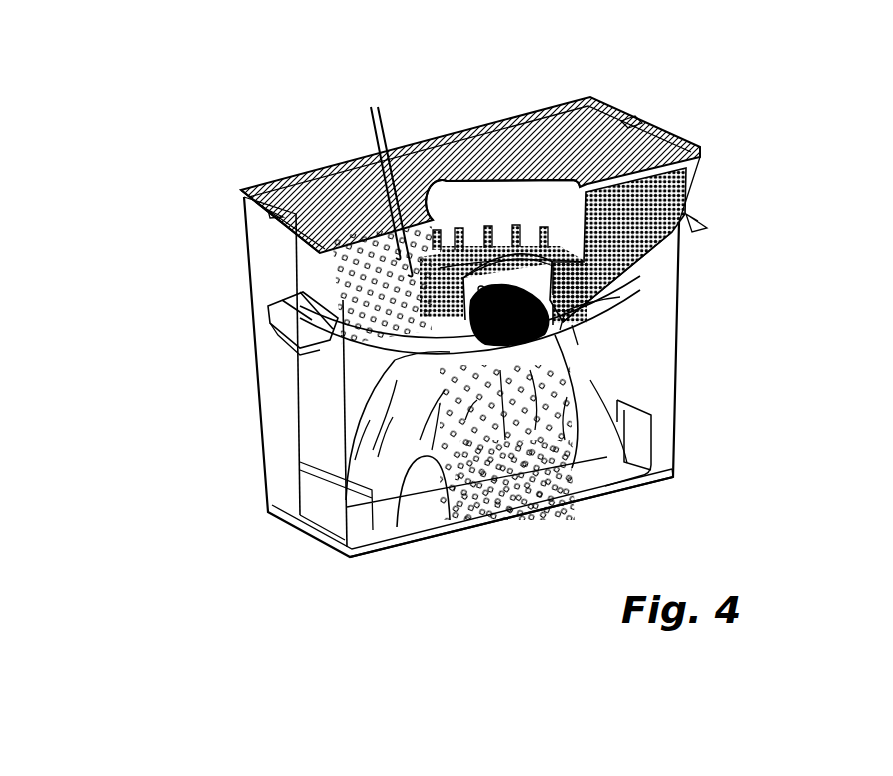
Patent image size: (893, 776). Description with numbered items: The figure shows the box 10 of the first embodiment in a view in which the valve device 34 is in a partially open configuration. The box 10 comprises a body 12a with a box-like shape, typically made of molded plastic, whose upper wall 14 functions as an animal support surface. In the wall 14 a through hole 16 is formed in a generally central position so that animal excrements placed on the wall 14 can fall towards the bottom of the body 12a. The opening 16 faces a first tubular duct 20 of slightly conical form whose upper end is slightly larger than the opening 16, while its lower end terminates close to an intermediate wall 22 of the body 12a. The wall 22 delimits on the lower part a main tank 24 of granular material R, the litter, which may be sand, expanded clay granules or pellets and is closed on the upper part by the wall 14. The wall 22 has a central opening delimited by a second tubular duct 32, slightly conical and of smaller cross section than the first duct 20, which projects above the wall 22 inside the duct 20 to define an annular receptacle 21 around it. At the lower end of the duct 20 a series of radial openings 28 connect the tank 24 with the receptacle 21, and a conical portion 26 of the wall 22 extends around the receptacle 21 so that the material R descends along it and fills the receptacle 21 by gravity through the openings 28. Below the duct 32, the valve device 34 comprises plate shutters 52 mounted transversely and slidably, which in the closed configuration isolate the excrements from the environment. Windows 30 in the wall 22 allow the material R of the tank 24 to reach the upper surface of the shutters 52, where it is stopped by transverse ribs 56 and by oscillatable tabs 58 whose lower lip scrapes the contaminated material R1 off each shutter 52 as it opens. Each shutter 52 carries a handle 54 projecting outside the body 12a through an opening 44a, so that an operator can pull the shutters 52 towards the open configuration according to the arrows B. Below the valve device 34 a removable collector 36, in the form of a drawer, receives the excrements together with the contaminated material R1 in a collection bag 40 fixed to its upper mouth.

The box 10 is at (197, 169).
The body 12a is at (375, 563).
The upper wall 14 is at (607, 142).
The through hole 16 is at (450, 205).
The first tubular duct 20 is at (486, 200).
The annular receptacle 21 is at (560, 248).
The intermediate wall 22 is at (620, 297).
The main tank 24 is at (345, 237).
The conical portion 26 is at (680, 243).
The radial openings 28 is at (383, 169).
The windows 30 is at (358, 258).
The second tubular duct 32 is at (520, 270).
The valve device 34 is at (585, 337).
The removable collector 36 is at (668, 477).
The excrement collection bag 40 is at (437, 473).
The opening 44a is at (310, 347).
The plate shutter 52 is at (455, 345).
The handle 54 is at (707, 223).
The transverse ribs 56 is at (440, 340).
The oscillatable tabs 58 is at (580, 355).
The granular material R is at (650, 158).
The contaminated material R1 is at (567, 385).
The arrows B is at (265, 300).